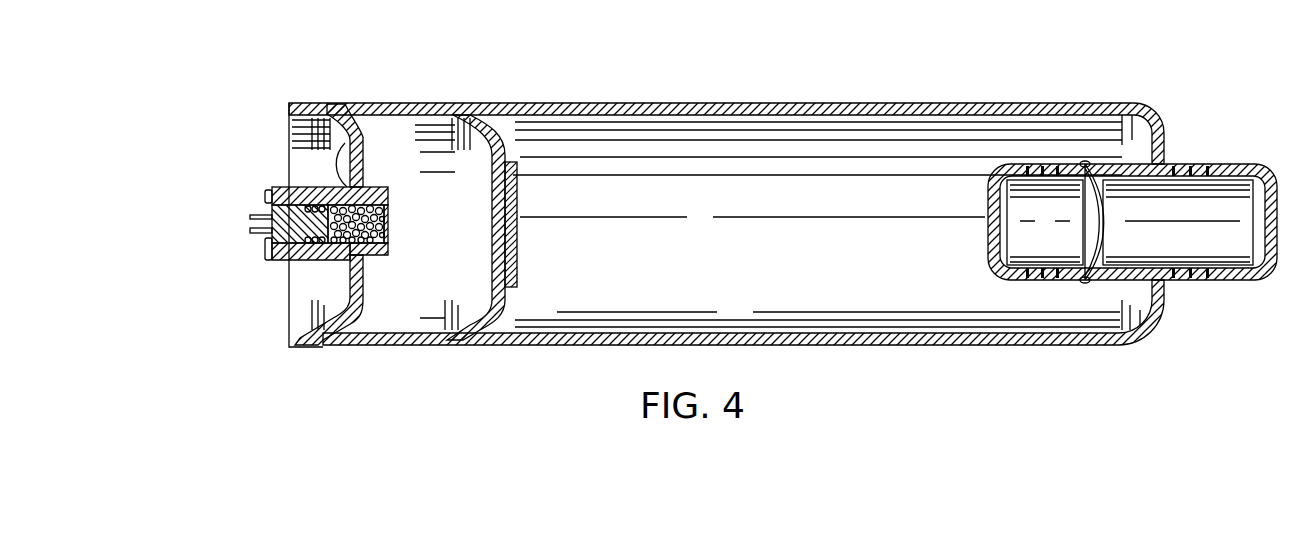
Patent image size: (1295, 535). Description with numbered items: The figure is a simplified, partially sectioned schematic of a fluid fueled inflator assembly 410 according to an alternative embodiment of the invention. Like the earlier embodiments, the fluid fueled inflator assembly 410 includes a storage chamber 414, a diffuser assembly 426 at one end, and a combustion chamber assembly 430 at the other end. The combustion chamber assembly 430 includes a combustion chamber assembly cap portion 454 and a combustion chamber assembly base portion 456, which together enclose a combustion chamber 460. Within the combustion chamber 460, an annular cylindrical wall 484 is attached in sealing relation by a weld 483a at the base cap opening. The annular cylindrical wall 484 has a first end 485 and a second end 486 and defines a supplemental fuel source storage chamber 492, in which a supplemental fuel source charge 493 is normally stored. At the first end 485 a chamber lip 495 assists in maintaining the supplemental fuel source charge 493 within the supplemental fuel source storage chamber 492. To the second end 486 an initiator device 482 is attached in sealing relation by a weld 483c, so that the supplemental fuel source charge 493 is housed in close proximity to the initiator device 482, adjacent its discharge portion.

The fluid fueled inflator assembly 410 is at (877, 89).
The storage chamber 414 is at (640, 154).
The diffuser assembly 426 is at (1250, 166).
The combustion chamber assembly 430 is at (382, 104).
The combustion chamber assembly cap portion 454 is at (445, 341).
The combustion chamber assembly base portion 456 is at (353, 314).
The combustion chamber 460 is at (418, 303).
The initiator device 482 is at (268, 193).
The weld 483a is at (330, 104).
The weld 483c is at (268, 258).
The annular cylindrical wall 484 is at (313, 188).
The first end 485 is at (392, 200).
The second end 486 is at (276, 265).
The supplemental fuel source storage chamber 492 is at (364, 205).
The supplemental fuel source charge 493 is at (386, 202).
The chamber lip 495 is at (384, 243).